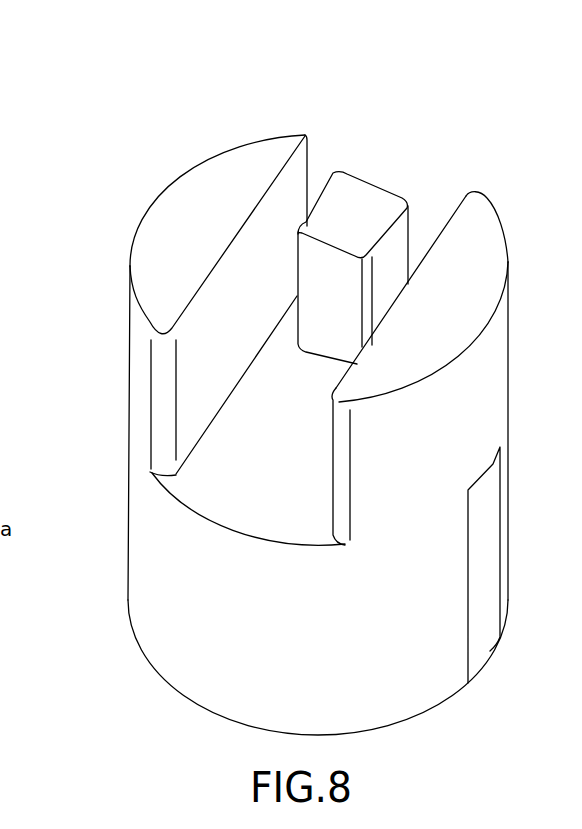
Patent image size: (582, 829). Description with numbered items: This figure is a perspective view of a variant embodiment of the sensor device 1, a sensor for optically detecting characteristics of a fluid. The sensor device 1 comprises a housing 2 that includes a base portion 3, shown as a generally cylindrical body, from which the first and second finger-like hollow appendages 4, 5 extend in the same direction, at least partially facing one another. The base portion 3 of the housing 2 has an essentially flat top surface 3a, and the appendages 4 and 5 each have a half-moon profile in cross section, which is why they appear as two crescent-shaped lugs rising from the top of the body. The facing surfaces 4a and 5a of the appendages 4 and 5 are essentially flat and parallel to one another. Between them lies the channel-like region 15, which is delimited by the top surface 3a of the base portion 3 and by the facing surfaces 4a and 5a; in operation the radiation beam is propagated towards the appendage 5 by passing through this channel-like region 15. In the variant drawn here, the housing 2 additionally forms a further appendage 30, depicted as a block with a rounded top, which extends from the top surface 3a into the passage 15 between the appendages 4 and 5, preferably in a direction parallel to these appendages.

The sensor device 1 is at (477, 148).
The housing 2 is at (123, 597).
The base portion 3 is at (397, 677).
The top surface 3a is at (268, 527).
The first appendage 4 is at (244, 134).
The facing surface of first appendage 4a is at (220, 345).
The second appendage 5 is at (510, 206).
The facing surface of second appendage 5a is at (338, 378).
The channel-like region 15 is at (221, 483).
The further appendage 30 is at (373, 164).